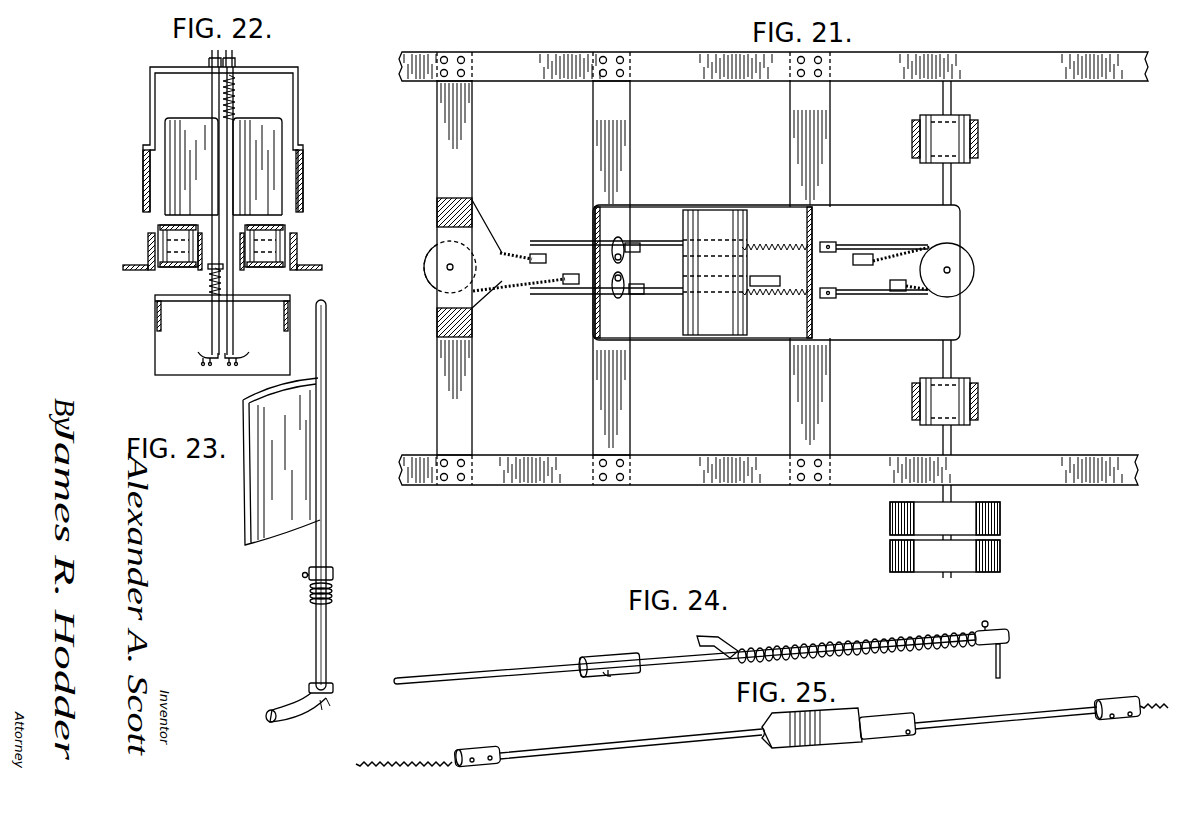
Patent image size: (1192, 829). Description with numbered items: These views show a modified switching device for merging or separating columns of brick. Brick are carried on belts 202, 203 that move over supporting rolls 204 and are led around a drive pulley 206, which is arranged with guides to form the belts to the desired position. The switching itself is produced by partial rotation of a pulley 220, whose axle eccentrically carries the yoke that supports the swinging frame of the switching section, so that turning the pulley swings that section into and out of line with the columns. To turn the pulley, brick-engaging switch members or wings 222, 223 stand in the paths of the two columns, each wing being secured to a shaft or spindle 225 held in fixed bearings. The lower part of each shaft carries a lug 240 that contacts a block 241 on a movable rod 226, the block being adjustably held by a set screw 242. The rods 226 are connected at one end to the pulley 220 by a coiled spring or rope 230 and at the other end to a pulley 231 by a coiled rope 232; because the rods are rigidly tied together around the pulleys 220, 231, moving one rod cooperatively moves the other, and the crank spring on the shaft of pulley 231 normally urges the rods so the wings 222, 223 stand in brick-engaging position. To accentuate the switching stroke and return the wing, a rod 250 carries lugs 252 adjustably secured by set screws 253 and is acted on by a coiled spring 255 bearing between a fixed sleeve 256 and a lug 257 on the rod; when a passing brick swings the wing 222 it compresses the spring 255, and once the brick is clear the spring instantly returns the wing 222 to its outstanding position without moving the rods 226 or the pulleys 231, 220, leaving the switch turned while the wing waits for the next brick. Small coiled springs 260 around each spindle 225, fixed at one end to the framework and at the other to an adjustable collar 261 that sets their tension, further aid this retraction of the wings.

In FIG. 21, the belt 202 is at (978, 157).
In FIG. 22, the belt 202 is at (158, 229).
In FIG. 21, the belt 203 is at (978, 407).
In FIG. 22, the belt 203 is at (262, 229).
In FIG. 22, the supporting roll 204 is at (165, 255).
In FIG. 21, the drive pulley 206 is at (962, 385).
In FIG. 21, the pulley 220 is at (426, 274).
In FIG. 22, the switch member 222 is at (182, 140).
In FIG. 23, the switch member 222 is at (260, 498).
In FIG. 22, the switch member 223 is at (262, 140).
In FIG. 22, the shaft 225 is at (212, 88).
In FIG. 23, the shaft 225 is at (328, 360).
In FIG. 21, the rod 226 is at (564, 242).
In FIG. 25, the rod 226 is at (634, 745).
In FIG. 21, the coiled spring or rope 230 is at (511, 286).
In FIG. 21, the pulley 231 is at (965, 270).
In FIG. 21, the coiled rope 232 is at (892, 255).
In FIG. 21, the lug 240 is at (616, 296).
In FIG. 22, the lug 240 is at (200, 354).
In FIG. 23, the lug 240 is at (282, 692).
In FIG. 21, the block 241 is at (641, 296).
In FIG. 25, the block 241 is at (848, 724).
In FIG. 25, the set screw 242 is at (912, 727).
In FIG. 24, the rod 250 is at (686, 667).
In FIG. 24, the lug 252 is at (618, 655).
In FIG. 24, the set screw 253 is at (604, 678).
In FIG. 24, the coiled spring 255 is at (822, 633).
In FIG. 24, the fixed sleeve 256 is at (1000, 631).
In FIG. 24, the lug 257 is at (742, 636).
In FIG. 22, the coiled spring 260 is at (210, 284).
In FIG. 23, the coiled spring 260 is at (324, 602).
In FIG. 23, the adjustable collar 261 is at (333, 573).